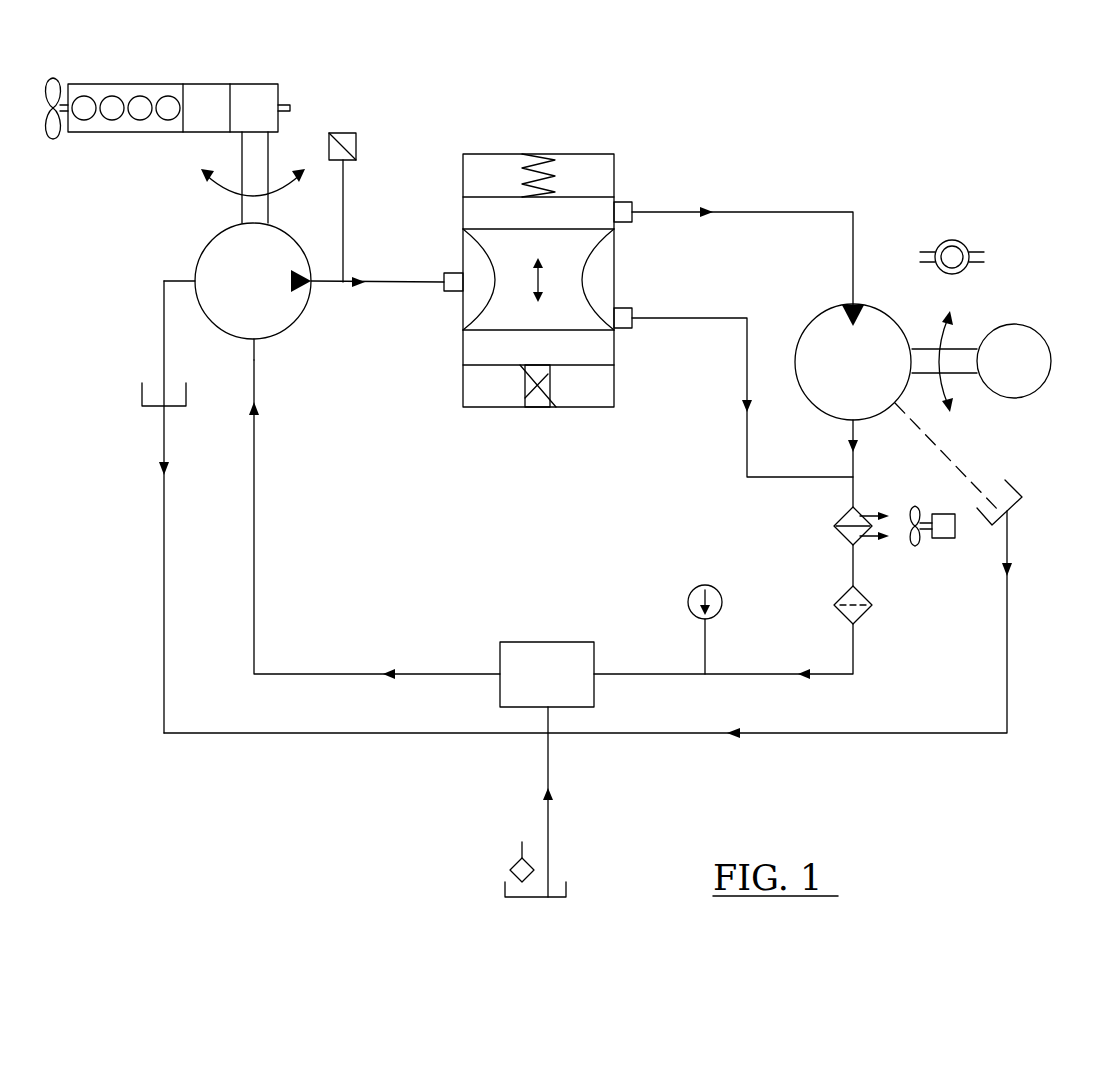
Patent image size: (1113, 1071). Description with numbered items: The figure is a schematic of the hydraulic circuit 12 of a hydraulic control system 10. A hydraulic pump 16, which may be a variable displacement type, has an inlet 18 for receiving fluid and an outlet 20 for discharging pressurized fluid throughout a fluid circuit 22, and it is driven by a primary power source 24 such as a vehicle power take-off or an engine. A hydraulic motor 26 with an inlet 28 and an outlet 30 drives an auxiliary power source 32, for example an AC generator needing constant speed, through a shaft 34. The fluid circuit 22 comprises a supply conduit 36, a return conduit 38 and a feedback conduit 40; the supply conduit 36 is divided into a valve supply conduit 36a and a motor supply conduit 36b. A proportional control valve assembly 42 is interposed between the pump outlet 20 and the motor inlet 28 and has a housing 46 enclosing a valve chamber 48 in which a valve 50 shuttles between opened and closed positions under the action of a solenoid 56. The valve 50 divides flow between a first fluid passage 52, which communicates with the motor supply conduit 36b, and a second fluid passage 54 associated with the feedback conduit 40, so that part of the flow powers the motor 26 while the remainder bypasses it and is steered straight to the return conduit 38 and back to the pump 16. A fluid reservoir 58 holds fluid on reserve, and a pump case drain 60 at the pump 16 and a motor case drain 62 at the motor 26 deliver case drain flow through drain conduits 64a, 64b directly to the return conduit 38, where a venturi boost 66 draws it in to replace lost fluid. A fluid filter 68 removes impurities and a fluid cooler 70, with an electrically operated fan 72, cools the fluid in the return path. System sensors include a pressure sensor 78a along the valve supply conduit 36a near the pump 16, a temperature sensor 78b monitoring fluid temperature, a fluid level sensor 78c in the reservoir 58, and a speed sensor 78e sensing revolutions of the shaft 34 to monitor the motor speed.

The hydraulic control system 10 is at (938, 134).
The hydraulic circuit 12 is at (462, 537).
The hydraulic pump 16 is at (207, 252).
The inlet 18 is at (257, 340).
The outlet 20 is at (316, 284).
The fluid circuit 22 is at (300, 605).
The primary power source 24 is at (282, 93).
The hydraulic motor 26 is at (800, 338).
The inlet 28 is at (852, 303).
The outlet 30 is at (853, 423).
The auxiliary power source 32 is at (1032, 325).
The shaft 34 is at (962, 373).
The supply conduit 36 is at (372, 272).
The valve supply conduit 36a is at (418, 287).
The motor supply conduit 36b is at (783, 212).
The return conduit 38 is at (257, 470).
The feedback conduit 40 is at (747, 447).
The proportional control valve assembly 42 is at (583, 154).
The housing 46 is at (505, 154).
The valve chamber 48 is at (603, 273).
The valve 50 is at (576, 327).
The first fluid passage 52 is at (628, 203).
The second fluid passage 54 is at (628, 330).
The solenoid 56 is at (540, 400).
The fluid reservoir 58 is at (548, 827).
The pump case drain 60 is at (143, 392).
The motor case drain 62 is at (1017, 478).
The drain conduit 64a is at (164, 620).
The drain conduit 64b is at (1008, 610).
The venturi boost 66 is at (545, 642).
The fluid filter 68 is at (868, 613).
The fluid cooler 70 is at (846, 521).
The fan 72 is at (945, 538).
The pressure sensor 78a is at (354, 140).
The temperature sensor 78b is at (692, 590).
The fluid level sensor 78c is at (510, 870).
The speed sensor 78e is at (958, 240).